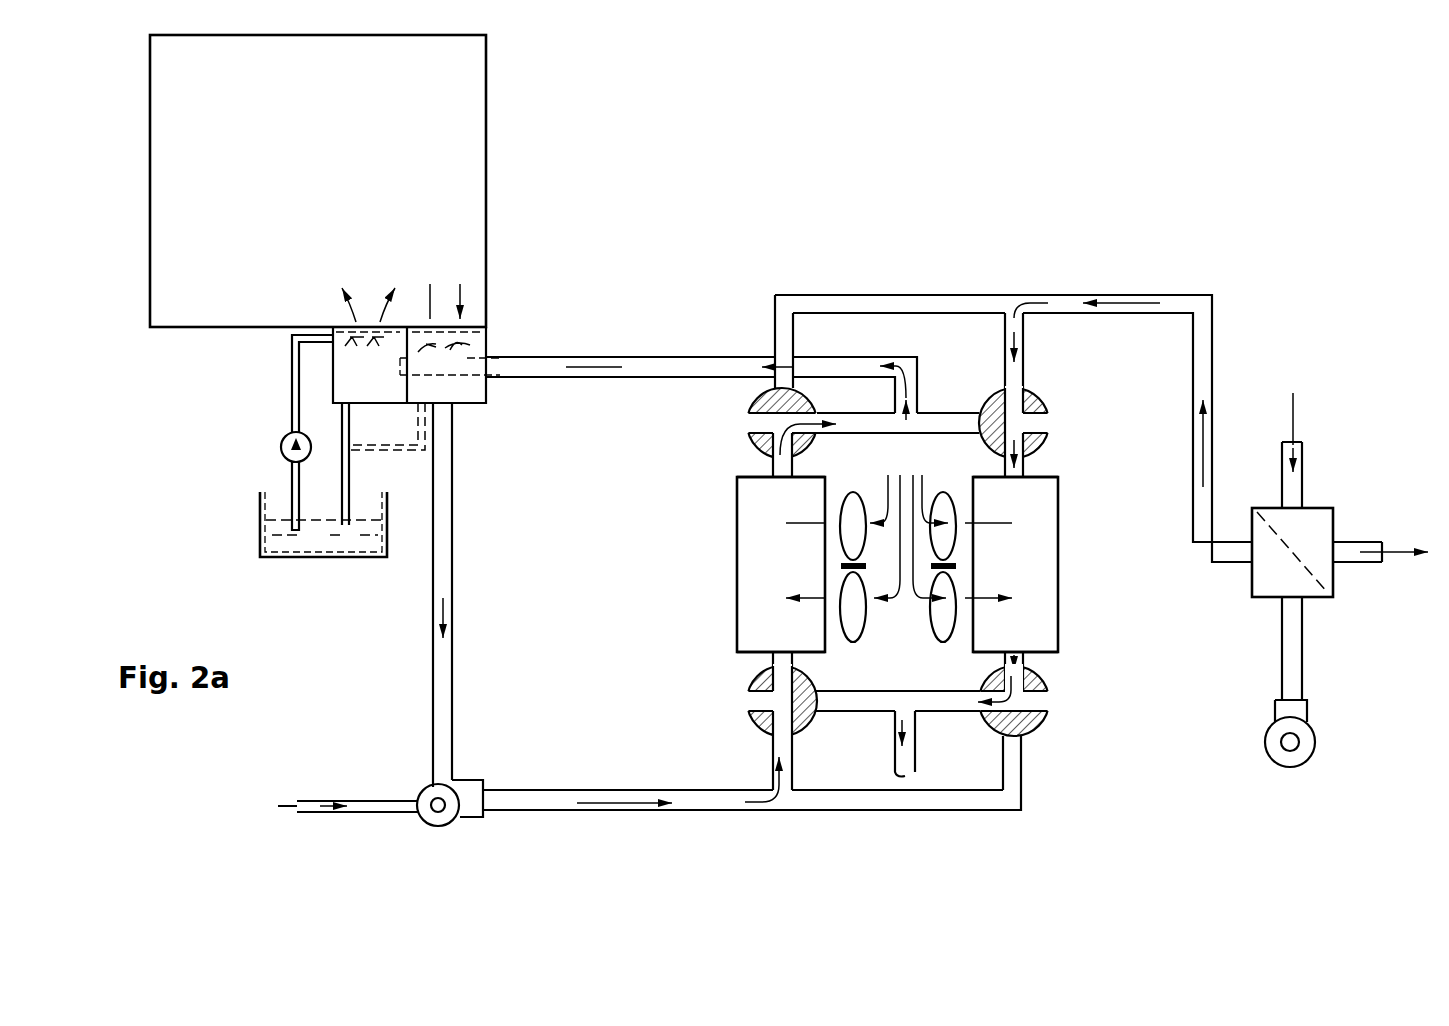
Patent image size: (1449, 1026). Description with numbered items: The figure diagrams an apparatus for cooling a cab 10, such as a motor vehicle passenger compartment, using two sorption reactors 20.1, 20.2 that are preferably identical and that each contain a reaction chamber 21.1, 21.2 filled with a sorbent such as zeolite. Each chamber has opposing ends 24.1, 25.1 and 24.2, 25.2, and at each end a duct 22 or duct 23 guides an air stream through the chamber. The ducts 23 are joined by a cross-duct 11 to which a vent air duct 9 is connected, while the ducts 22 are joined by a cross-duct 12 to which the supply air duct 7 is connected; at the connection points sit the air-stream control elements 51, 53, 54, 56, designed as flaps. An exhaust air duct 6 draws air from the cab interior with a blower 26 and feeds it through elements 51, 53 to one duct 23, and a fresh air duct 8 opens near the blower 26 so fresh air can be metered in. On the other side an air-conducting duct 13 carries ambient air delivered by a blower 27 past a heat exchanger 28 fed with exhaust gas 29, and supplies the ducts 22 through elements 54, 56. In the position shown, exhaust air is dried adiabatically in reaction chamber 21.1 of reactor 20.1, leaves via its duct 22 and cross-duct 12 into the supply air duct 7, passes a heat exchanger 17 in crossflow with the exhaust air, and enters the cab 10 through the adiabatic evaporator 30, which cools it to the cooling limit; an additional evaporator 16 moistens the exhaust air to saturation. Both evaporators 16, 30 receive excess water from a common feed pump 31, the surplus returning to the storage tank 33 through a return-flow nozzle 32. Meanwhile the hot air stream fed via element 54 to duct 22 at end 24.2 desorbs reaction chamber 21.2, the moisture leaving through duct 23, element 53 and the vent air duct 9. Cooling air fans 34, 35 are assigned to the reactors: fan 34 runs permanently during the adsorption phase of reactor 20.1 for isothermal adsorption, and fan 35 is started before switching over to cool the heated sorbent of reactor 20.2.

The cab 10 is at (315, 171).
The evaporator 30 is at (388, 391).
The additional evaporator 16 is at (486, 340).
The heat exchanger 17 is at (469, 392).
The supply air duct 7 is at (654, 357).
The air-conducting duct 13 is at (1062, 300).
The cross-duct 12 is at (839, 420).
The air-stream control element 56 is at (746, 424).
The air-stream control element 54 is at (1051, 423).
The duct 22 is at (770, 470).
The sorption reactor 20.1 is at (724, 574).
The sorption reactor 20.2 is at (1067, 569).
The reaction chamber 21.1 is at (745, 611).
The reaction chamber 21.2 is at (1058, 622).
The end of reaction chamber compartment 24.1 is at (742, 475).
The end of reaction chamber compartment 24.2 is at (1052, 475).
The end of reaction chamber compartment 25.1 is at (750, 656).
The end of reaction chamber compartment 25.2 is at (1047, 657).
The cooling air fan 34 is at (862, 625).
The cooling air fan 35 is at (942, 632).
The duct 23 is at (746, 679).
The air-stream control element 51 is at (745, 721).
The air-stream control element 53 is at (1045, 722).
The cross-duct 11 is at (845, 711).
The vent air duct 9 is at (916, 748).
The exhaust air duct 6 is at (433, 700).
The blower 26 is at (445, 822).
The fresh air duct 8 is at (370, 813).
The feed pump 31 is at (282, 445).
The return-flow nozzle 32 is at (349, 477).
The storage tank 33 is at (262, 538).
The heat exchanger 28 is at (1325, 577).
The exhaust gas 29 is at (1294, 410).
The blower 27 is at (1315, 745).